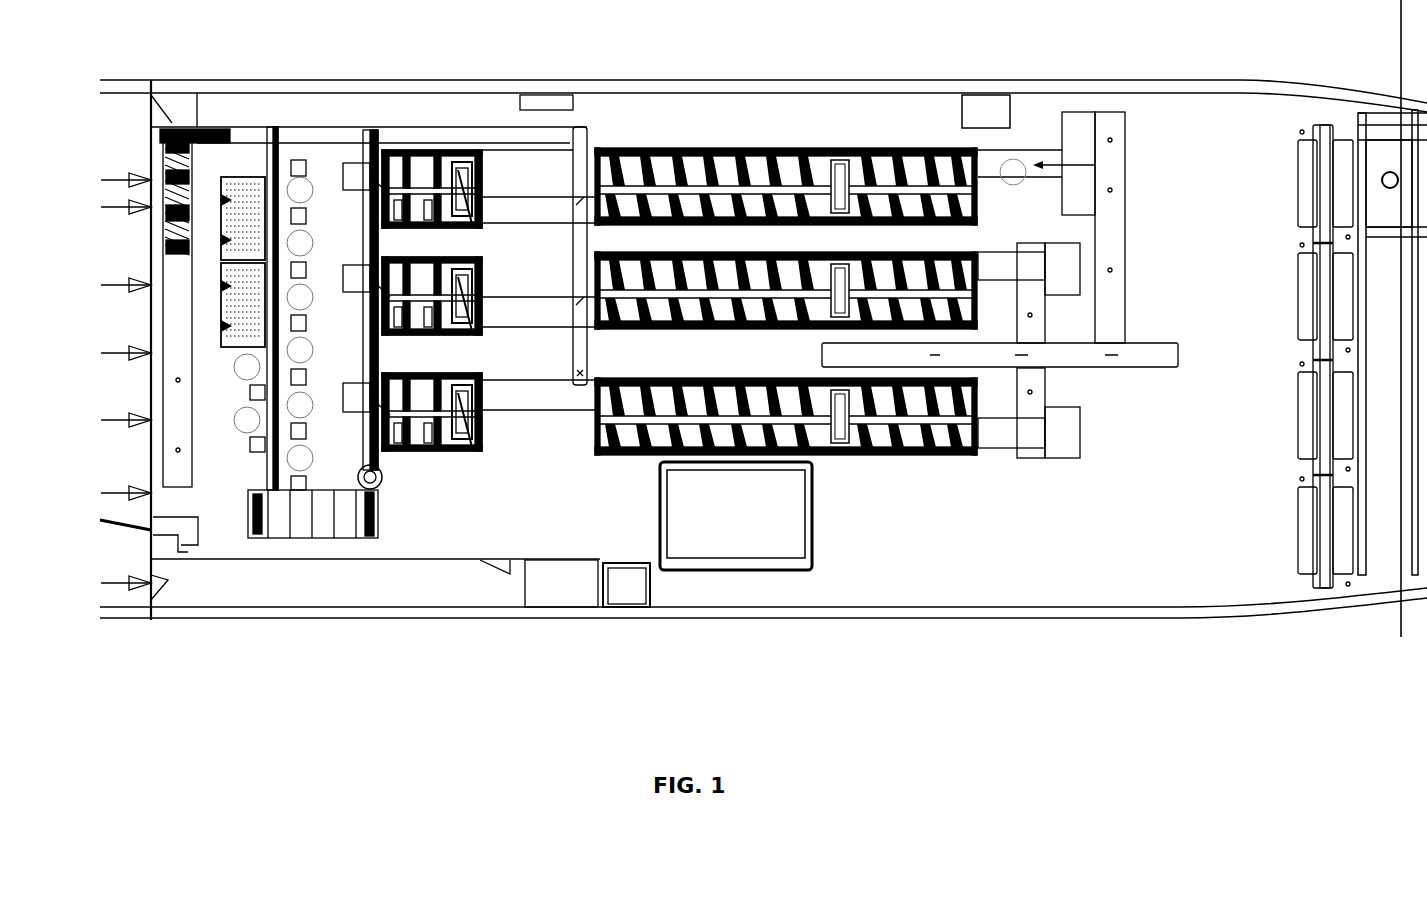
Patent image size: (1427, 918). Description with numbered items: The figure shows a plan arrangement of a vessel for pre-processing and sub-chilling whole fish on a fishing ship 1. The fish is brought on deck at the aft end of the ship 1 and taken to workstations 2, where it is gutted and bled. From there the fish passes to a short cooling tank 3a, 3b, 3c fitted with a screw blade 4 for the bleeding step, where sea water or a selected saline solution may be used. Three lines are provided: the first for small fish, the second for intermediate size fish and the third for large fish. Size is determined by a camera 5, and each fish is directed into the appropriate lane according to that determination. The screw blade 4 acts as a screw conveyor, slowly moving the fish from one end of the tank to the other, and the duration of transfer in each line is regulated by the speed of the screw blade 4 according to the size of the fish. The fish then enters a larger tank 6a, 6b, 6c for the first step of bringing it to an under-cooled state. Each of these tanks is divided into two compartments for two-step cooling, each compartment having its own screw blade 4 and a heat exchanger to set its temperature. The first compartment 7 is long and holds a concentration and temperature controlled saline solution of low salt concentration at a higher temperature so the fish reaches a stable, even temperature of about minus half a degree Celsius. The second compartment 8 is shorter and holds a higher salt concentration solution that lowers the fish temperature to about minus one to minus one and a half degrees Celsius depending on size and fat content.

The ship 1 is at (763, 318).
The workstations 2 is at (303, 150).
The short cooling tank 3a is at (460, 150).
The short cooling tank 3b is at (469, 291).
The short cooling tank 3c is at (478, 453).
The screw blade 4 is at (418, 150).
The camera 5 is at (375, 485).
The larger tank 6a is at (978, 150).
The larger tank 6b is at (1029, 293).
The larger tank 6c is at (975, 465).
The first compartment 7 is at (604, 251).
The second compartment 8 is at (950, 111).